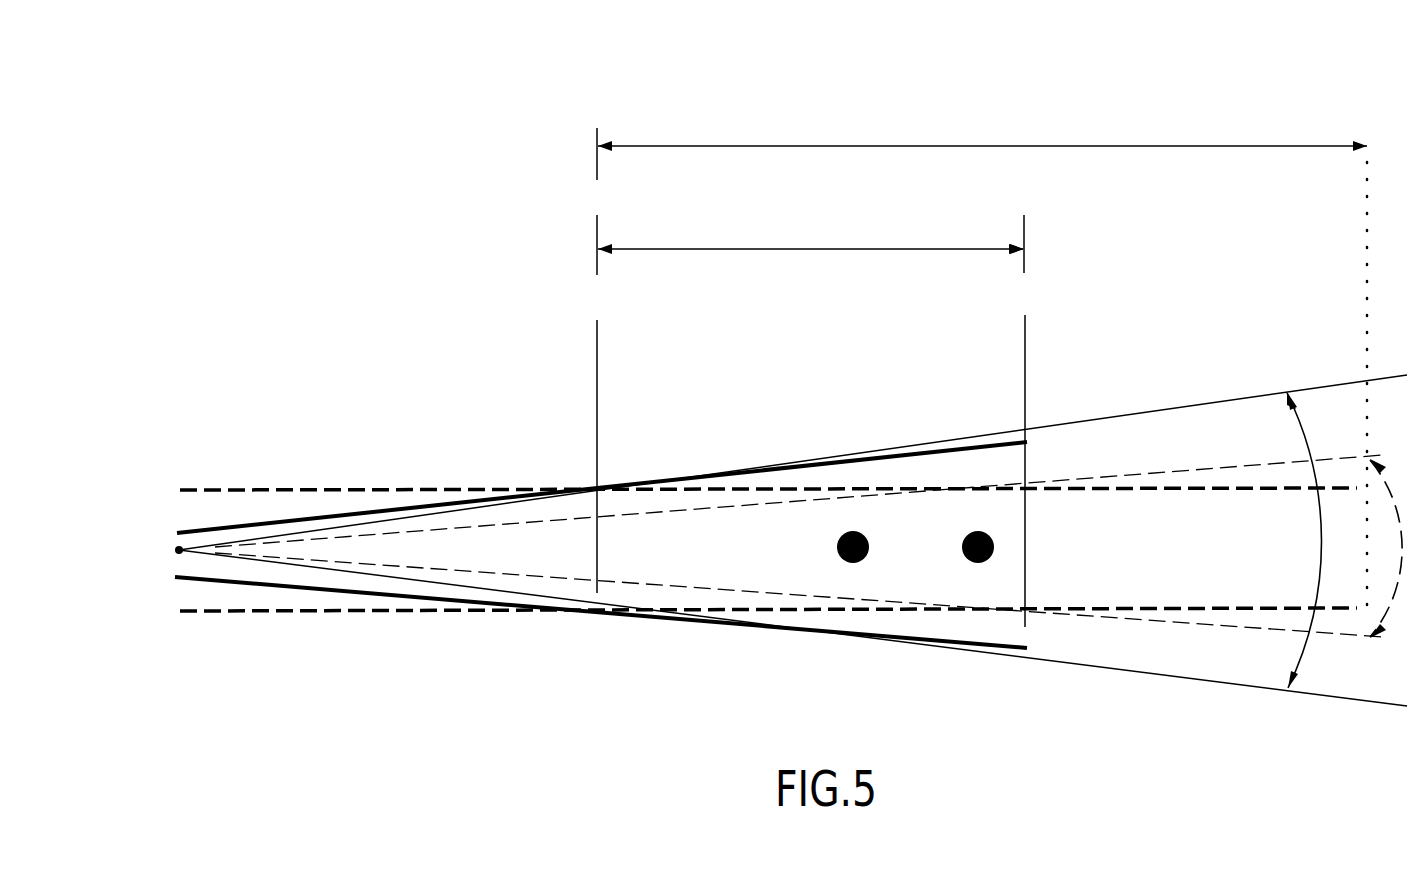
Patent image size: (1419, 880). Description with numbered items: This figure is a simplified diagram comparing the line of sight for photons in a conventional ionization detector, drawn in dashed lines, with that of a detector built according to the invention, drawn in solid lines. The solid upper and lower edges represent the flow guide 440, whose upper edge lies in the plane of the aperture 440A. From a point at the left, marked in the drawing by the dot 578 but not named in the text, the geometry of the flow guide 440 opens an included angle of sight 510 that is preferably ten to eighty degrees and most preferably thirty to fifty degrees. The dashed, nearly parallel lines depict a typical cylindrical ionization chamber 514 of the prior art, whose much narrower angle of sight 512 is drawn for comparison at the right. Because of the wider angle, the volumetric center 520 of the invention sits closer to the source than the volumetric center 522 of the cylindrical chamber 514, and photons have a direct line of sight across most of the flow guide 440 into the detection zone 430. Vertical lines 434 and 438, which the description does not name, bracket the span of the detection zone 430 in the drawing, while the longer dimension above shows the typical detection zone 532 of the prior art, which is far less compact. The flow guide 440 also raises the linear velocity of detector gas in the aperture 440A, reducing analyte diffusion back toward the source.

The detection zone 532 is at (1097, 144).
The detection zone 430 is at (803, 210).
The first boundary plane 434 is at (597, 358).
The second boundary plane 438 is at (1024, 352).
The aperture 440A is at (178, 532).
The flow guide 440 is at (890, 634).
The cylindrical ionization chamber 514 is at (347, 489).
The beam focal point 578 is at (175, 551).
The volumetric center 520 is at (835, 522).
The volumetric center 522 is at (970, 520).
The included angle of sight 510 is at (1287, 437).
The angle of sight 512 is at (1385, 518).